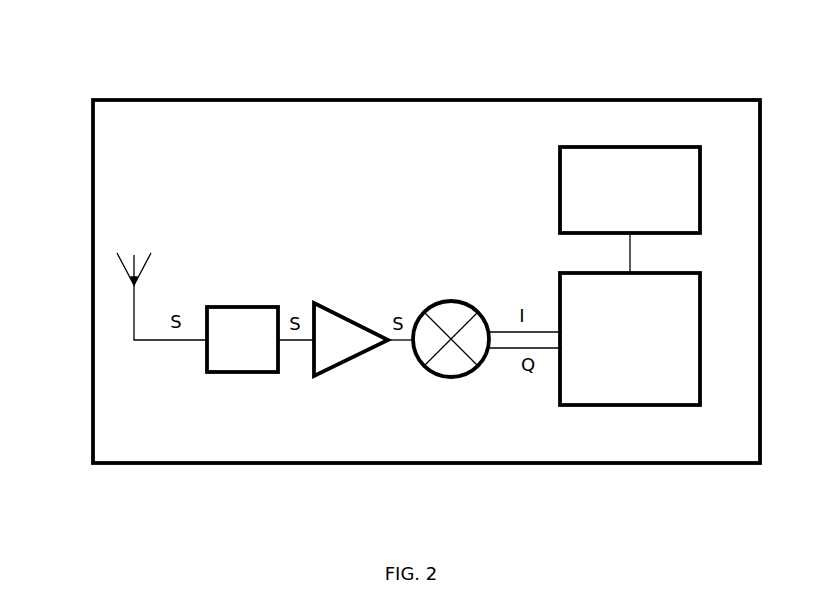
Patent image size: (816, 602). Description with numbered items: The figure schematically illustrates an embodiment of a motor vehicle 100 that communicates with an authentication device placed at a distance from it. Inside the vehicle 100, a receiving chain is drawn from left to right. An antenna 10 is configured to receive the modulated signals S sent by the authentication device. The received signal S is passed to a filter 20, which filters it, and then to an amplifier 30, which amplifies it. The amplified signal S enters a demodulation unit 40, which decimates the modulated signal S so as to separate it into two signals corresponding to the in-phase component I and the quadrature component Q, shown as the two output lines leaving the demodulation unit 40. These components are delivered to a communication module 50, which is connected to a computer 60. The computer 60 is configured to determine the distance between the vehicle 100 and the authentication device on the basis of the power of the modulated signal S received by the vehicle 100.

The motor vehicle 100 is at (268, 100).
The antenna 10 is at (134, 305).
The filter 20 is at (228, 372).
The amplifier 30 is at (333, 376).
The demodulation unit 40 is at (455, 377).
The communication module 50 is at (630, 405).
The computer 60 is at (630, 147).